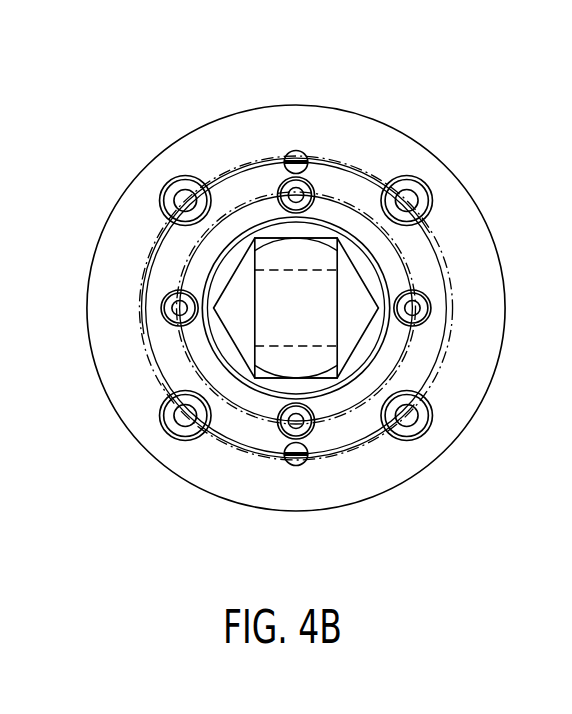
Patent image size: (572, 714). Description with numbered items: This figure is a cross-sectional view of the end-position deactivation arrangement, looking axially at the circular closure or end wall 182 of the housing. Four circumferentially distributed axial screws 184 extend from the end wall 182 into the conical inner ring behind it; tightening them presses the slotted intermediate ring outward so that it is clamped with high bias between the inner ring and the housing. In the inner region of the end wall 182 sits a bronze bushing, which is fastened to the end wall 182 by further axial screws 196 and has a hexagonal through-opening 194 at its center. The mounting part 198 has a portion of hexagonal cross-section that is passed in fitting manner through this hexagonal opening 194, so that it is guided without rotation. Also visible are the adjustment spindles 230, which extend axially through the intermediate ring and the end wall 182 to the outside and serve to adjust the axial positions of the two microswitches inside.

The end wall 182 is at (470, 236).
The axial screws 184 is at (412, 182).
The hexagonal through-opening 194 is at (353, 337).
The axial screws 196 is at (418, 308).
The mounting part 198 is at (243, 336).
The adjustment spindles 230 is at (298, 152).